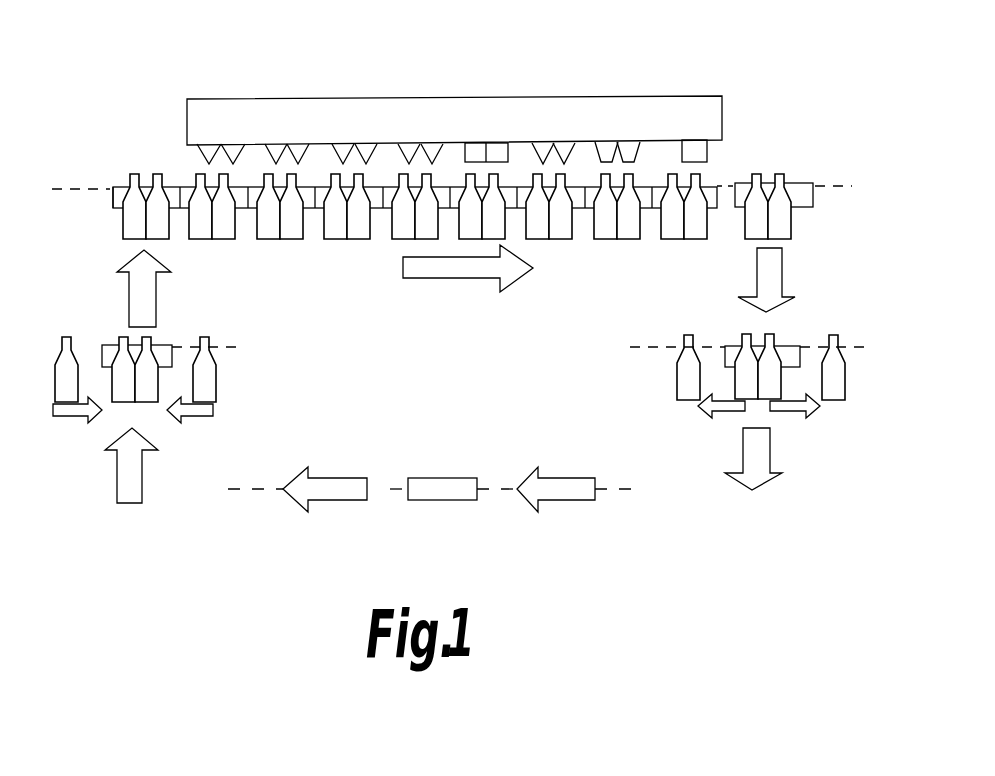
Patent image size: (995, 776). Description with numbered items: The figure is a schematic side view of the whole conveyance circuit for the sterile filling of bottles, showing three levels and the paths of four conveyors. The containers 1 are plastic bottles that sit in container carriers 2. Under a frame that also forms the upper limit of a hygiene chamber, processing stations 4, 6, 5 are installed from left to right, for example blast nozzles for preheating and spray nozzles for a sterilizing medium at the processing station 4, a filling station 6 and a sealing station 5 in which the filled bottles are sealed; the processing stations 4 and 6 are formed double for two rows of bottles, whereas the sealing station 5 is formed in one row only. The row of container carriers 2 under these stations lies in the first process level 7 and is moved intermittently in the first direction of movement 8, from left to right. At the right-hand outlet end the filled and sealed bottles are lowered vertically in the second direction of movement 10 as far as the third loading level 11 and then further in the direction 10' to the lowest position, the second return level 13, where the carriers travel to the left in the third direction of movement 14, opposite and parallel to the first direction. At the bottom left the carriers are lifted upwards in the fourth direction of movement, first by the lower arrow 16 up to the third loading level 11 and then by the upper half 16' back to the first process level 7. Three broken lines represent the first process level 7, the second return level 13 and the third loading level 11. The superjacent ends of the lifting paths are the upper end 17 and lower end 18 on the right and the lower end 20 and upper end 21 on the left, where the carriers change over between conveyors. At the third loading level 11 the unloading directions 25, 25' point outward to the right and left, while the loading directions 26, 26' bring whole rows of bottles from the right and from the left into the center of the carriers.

The container 1 is at (147, 358).
The container carrier 2 is at (118, 191).
The processing station 4 is at (209, 155).
The sealing station 5 is at (690, 152).
The filling station 6 is at (607, 152).
The first process level 7 is at (75, 191).
The first direction of movement 8 is at (449, 265).
The second direction of movement 10 is at (737, 279).
The second direction of movement 10' is at (730, 459).
The third loading level 11 is at (238, 347).
The second return level 13 is at (375, 490).
The third direction of movement 14 is at (332, 490).
The fourth direction of movement 16 is at (156, 465).
The fourth direction of movement 16' is at (118, 288).
The upper end 17 is at (818, 172).
The lower end 18 is at (740, 493).
The lower end 20 is at (106, 506).
The upper end 21 is at (127, 182).
The loading direction 25 is at (725, 423).
The loading direction 25' is at (814, 425).
The loading direction 26 is at (71, 431).
The loading direction 26' is at (209, 424).